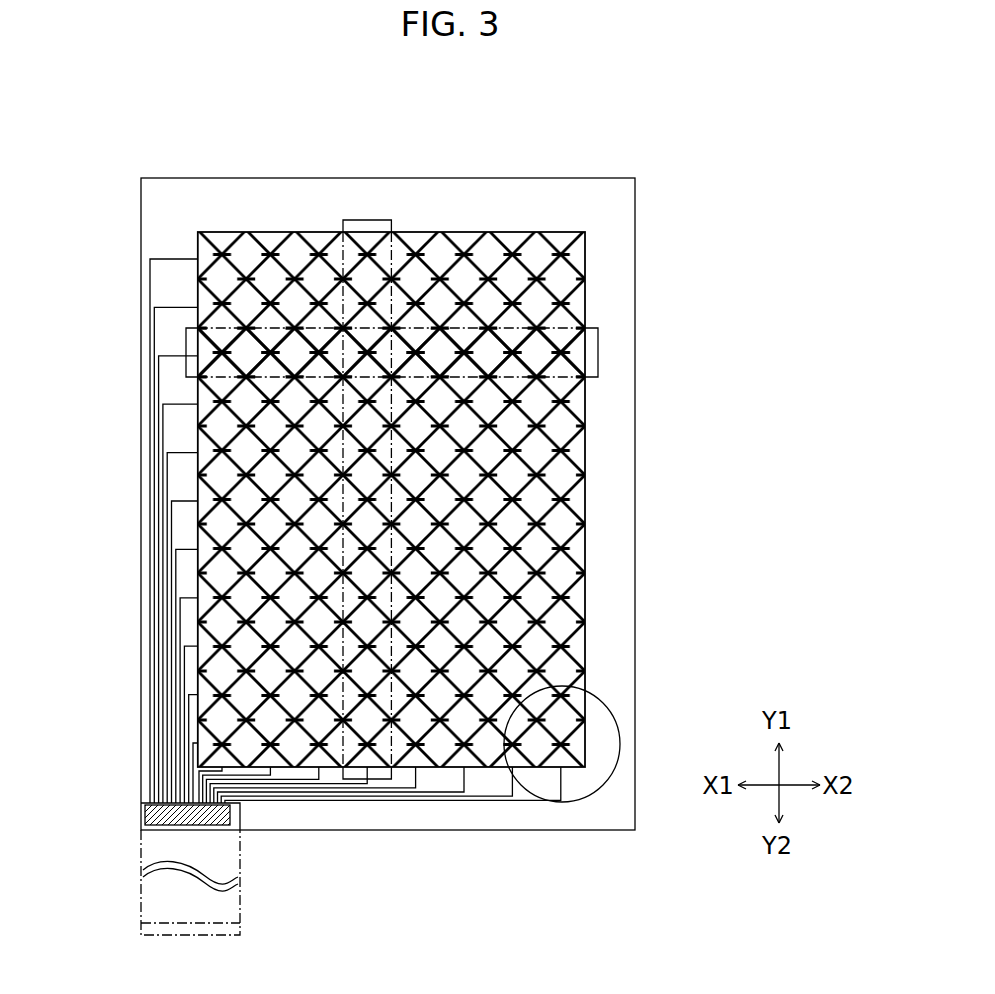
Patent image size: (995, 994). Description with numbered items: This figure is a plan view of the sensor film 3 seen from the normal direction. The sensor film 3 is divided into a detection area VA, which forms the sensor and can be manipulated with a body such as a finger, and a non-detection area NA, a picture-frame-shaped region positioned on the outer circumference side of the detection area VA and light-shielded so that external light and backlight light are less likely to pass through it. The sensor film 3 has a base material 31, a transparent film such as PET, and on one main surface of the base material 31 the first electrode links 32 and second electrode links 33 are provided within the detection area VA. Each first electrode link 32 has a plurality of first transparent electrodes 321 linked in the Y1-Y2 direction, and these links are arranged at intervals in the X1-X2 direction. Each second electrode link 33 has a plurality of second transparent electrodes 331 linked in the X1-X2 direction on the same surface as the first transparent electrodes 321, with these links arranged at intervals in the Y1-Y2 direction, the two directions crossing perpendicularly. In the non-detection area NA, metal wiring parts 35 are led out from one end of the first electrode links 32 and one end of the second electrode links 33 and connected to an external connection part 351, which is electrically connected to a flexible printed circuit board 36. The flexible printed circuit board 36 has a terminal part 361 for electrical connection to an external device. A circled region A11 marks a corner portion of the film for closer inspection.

The sensor film 3 is at (686, 176).
The base material 31 is at (598, 190).
The first electrode link 32 is at (372, 221).
The first transparent electrode 321 is at (366, 281).
The second electrode link 33 is at (600, 338).
The second transparent electrode 331 is at (540, 351).
The wiring part 35 is at (149, 283).
The external connection part 351 is at (146, 809).
The flexible printed circuit board 36 is at (241, 852).
The terminal part 361 is at (241, 926).
The detection area VA is at (566, 424).
The non-detection area NA is at (614, 486).
The enlarged region A11 is at (609, 704).